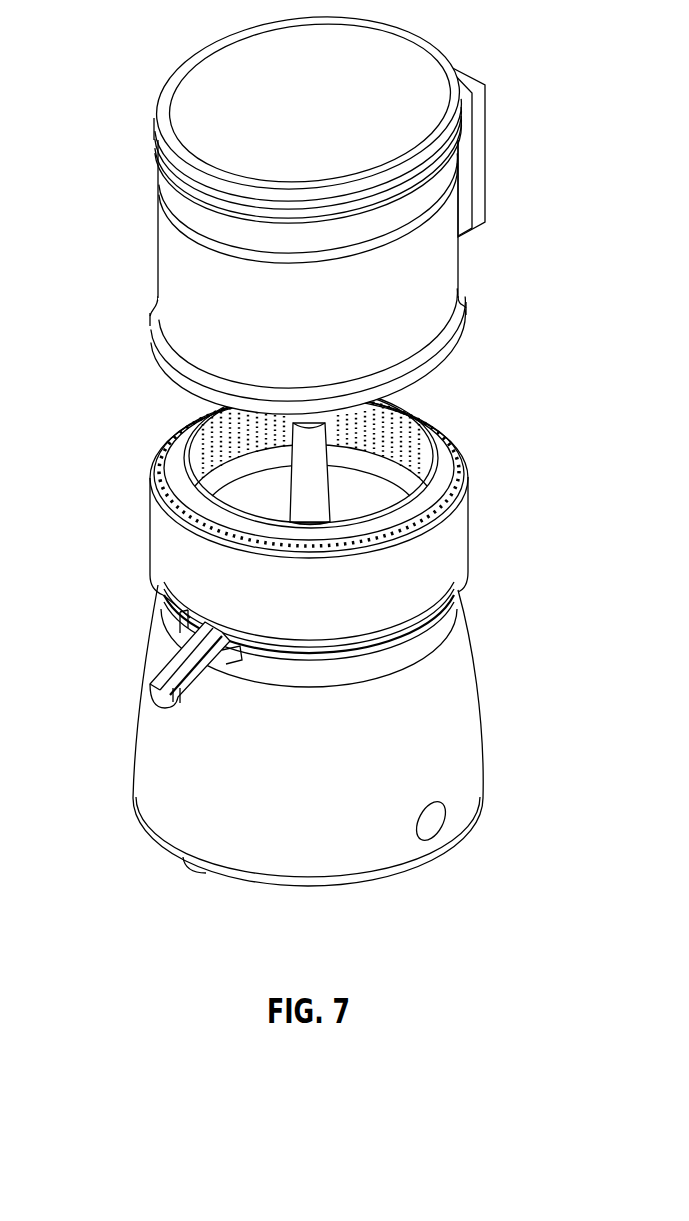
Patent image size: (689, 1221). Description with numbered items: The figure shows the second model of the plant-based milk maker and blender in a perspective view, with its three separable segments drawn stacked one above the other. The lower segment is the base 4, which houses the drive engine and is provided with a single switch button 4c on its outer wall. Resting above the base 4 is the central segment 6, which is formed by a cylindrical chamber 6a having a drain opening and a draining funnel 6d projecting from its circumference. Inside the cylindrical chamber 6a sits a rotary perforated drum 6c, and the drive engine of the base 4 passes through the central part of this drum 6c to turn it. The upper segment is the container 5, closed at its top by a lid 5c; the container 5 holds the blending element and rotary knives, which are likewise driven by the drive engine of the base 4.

The base 4 is at (336, 736).
The switch button 4c is at (430, 833).
The container 5 is at (296, 216).
The lid 5c is at (198, 63).
The central segment 6 is at (295, 666).
The cylindrical chamber 6a is at (458, 535).
The rotary perforated drum 6c is at (420, 423).
The draining funnel 6d is at (180, 703).